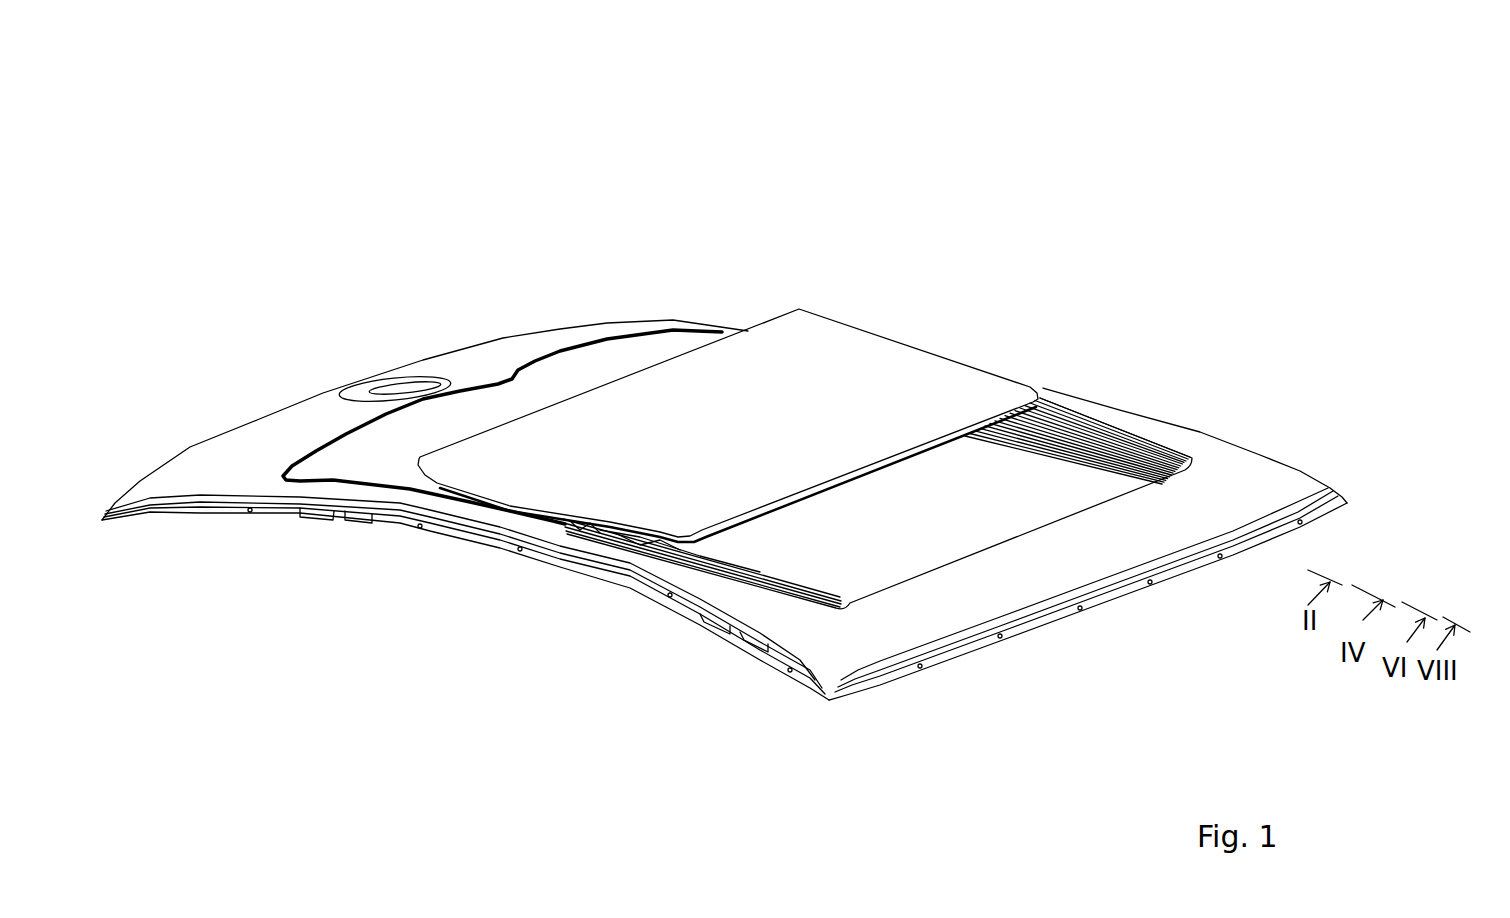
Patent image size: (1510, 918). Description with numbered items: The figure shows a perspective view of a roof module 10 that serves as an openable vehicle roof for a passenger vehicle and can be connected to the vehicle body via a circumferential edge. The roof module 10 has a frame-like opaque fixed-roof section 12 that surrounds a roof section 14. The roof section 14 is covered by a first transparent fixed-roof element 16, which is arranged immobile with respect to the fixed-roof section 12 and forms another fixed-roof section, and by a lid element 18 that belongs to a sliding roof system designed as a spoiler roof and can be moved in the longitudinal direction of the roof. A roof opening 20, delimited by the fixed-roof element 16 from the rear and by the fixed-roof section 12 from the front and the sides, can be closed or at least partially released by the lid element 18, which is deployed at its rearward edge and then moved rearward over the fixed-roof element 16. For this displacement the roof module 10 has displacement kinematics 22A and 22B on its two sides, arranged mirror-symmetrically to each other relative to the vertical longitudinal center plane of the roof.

The roof module 10 is at (785, 409).
The fixed-roof section 12 is at (518, 342).
The roof section 14 is at (1135, 430).
The first transparent fixed-roof element 16 is at (658, 345).
The lid element 18 is at (868, 372).
The roof opening 20 is at (898, 577).
The displacement kinematics 22A is at (1040, 447).
The displacement kinematics 22B is at (745, 574).